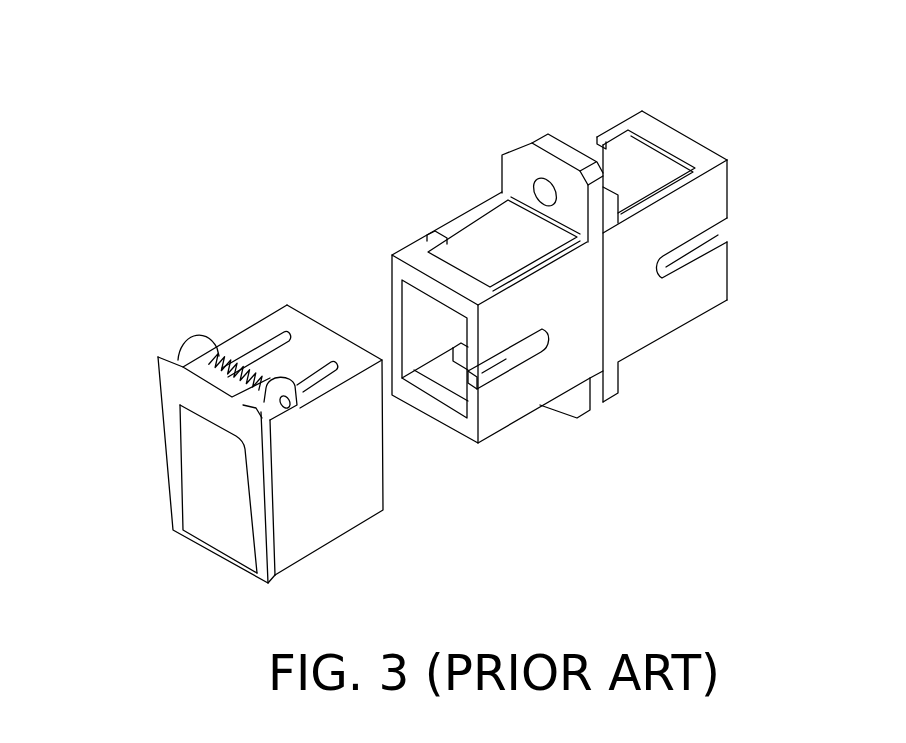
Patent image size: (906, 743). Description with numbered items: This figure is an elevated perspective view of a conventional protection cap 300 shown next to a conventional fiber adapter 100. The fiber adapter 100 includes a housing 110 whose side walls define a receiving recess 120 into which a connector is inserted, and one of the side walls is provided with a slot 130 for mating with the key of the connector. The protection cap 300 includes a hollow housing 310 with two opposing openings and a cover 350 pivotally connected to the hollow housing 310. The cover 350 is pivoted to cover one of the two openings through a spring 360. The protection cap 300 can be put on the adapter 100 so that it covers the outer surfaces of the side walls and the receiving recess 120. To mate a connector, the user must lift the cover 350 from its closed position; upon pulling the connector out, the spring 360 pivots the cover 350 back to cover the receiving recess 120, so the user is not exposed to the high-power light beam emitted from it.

The fiber adapter 100 is at (650, 91).
The housing 110 is at (418, 227).
The receiving recess 120 is at (452, 372).
The slot 130 is at (495, 358).
The protection cap 300 is at (279, 233).
The hollow housing 310 is at (274, 325).
The cover 350 is at (208, 502).
The spring 360 is at (233, 363).